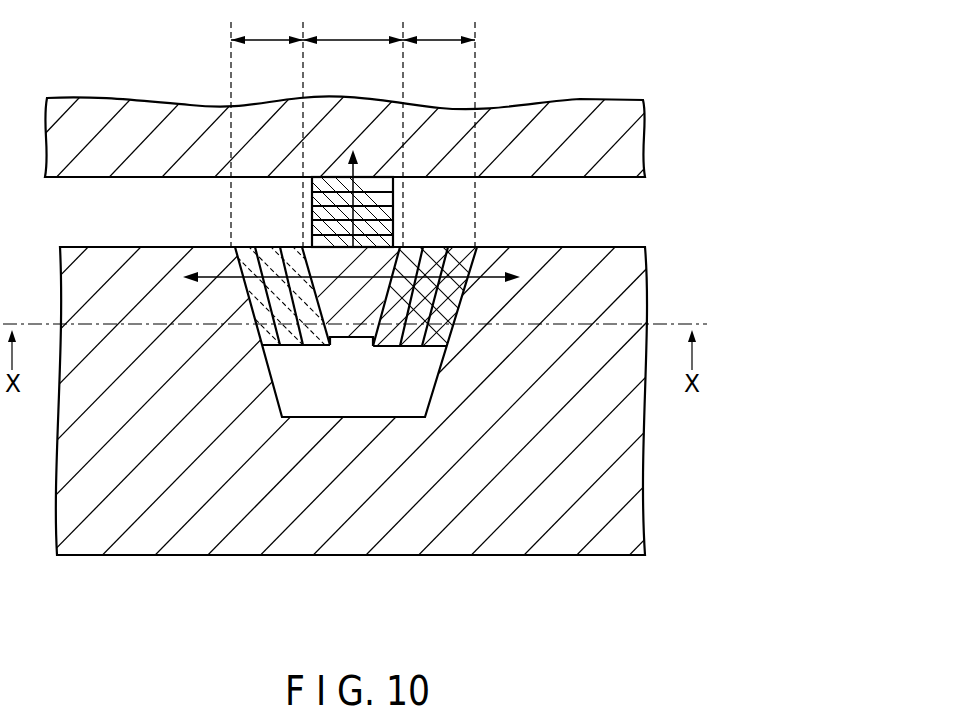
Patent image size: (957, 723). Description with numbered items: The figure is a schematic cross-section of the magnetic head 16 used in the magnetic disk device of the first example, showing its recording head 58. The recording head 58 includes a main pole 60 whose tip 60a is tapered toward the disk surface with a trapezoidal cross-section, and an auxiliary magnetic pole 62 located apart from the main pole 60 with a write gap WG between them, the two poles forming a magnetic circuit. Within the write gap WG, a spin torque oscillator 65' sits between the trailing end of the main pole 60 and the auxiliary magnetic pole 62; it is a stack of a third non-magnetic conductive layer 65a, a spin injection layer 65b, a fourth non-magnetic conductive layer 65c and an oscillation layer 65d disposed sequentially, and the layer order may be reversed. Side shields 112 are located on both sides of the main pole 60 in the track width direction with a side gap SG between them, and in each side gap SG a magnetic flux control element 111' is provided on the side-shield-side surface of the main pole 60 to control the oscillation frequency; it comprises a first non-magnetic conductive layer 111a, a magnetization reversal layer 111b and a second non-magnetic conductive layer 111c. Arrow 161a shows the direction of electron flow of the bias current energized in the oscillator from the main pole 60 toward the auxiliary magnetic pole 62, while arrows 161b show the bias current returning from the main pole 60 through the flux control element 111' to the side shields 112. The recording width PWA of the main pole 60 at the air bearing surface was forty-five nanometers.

The magnetic head 16 is at (580, 74).
The recording head 58 is at (632, 217).
The main pole 60 is at (447, 250).
The tip of the main pole 60a is at (338, 247).
The auxiliary magnetic pole 62 is at (640, 146).
The spin torque oscillator 65' is at (276, 202).
The third non-magnetic conductive layer 65a is at (312, 185).
The spin injection layer 65b is at (312, 228).
The fourth non-magnetic conductive layer 65c is at (312, 211).
The oscillation layer 65d is at (323, 198).
The magnetic flux control element 111' is at (311, 617).
The first non-magnetic conductive layer 111a is at (318, 340).
The magnetization reversal layer 111b is at (293, 340).
The second non-magnetic conductive layer 111c is at (268, 340).
The side shield 112 is at (637, 455).
The arrow indicating bias current direction in the STO 161a is at (327, 272).
The arrow indicating bias current direction in the FCL 161b is at (222, 285).
The write gap WG is at (395, 222).
The side gap SG is at (353, 129).
The recording width PWA is at (353, 27).